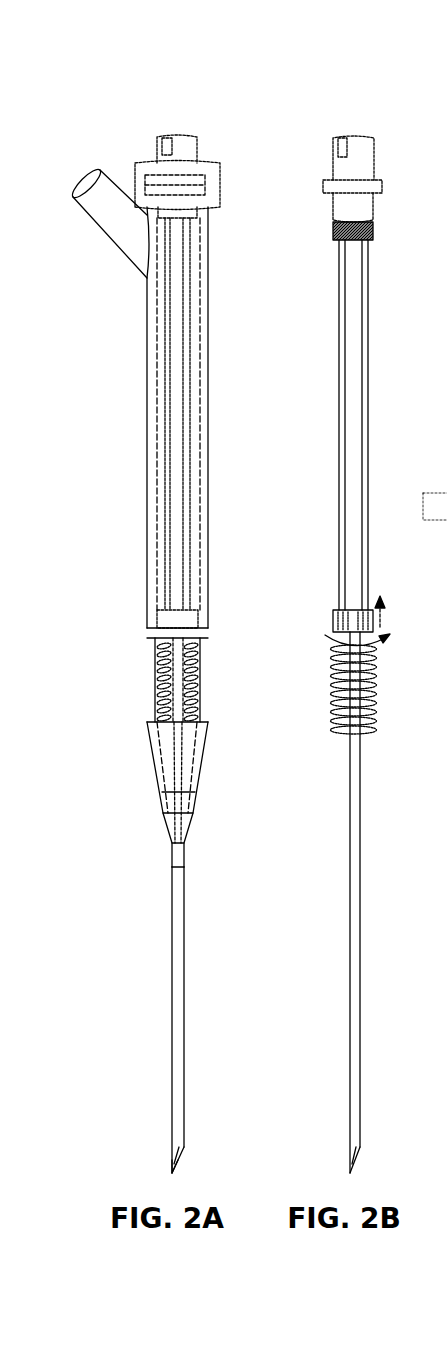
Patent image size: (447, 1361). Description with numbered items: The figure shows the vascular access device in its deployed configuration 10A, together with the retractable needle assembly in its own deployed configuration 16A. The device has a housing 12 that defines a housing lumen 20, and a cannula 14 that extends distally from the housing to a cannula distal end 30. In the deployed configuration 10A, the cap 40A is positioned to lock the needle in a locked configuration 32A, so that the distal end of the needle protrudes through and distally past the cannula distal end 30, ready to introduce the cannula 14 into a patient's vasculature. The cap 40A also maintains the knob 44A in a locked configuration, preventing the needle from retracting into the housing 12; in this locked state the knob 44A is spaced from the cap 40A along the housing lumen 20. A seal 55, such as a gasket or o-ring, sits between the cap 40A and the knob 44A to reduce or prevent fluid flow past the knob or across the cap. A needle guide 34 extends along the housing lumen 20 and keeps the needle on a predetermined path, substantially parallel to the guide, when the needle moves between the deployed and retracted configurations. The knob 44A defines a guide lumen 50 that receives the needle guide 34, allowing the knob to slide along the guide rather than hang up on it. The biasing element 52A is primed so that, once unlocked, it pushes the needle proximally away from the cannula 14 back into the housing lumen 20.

In FIG. 2A, the deployed configuration of the device 10A is at (116, 62).
In FIG. 2A, the deployed configuration of the needle assembly 16A is at (180, 125).
In FIG. 2B, the deployed configuration of the needle assembly 16A is at (323, 118).
In FIG. 2A, the housing 12 is at (138, 575).
In FIG. 2A, the housing lumen 20 is at (177, 520).
In FIG. 2A, the cannula 14 is at (172, 1020).
In FIG. 2A, the cannula distal end 30 is at (179, 1115).
In FIG. 2A, the needle in locked configuration 32A is at (168, 1153).
In FIG. 2B, the needle in locked configuration 32A is at (345, 1153).
In FIG. 2B, the cap in deployed configuration 40A is at (384, 164).
In FIG. 2B, the seal 55 is at (375, 228).
In FIG. 2B, the needle guide 34 is at (368, 372).
In FIG. 2B, the guide lumen 50 is at (334, 614).
In FIG. 2B, the knob in locked configuration 44A is at (334, 628).
In FIG. 2B, the biasing element in deployed configuration 52A is at (373, 702).